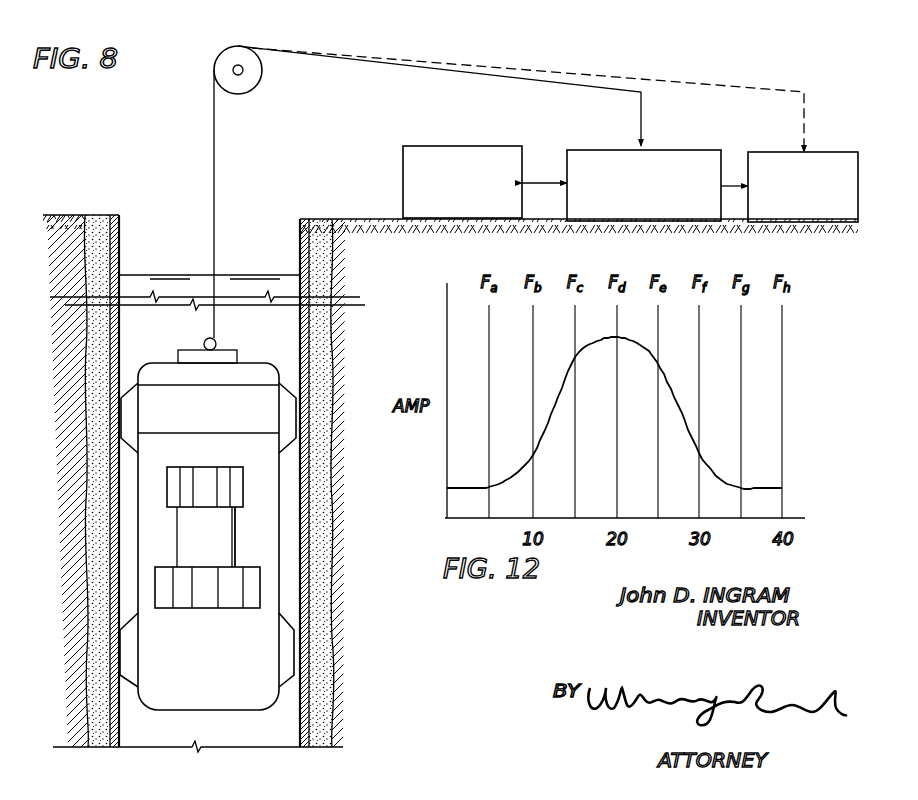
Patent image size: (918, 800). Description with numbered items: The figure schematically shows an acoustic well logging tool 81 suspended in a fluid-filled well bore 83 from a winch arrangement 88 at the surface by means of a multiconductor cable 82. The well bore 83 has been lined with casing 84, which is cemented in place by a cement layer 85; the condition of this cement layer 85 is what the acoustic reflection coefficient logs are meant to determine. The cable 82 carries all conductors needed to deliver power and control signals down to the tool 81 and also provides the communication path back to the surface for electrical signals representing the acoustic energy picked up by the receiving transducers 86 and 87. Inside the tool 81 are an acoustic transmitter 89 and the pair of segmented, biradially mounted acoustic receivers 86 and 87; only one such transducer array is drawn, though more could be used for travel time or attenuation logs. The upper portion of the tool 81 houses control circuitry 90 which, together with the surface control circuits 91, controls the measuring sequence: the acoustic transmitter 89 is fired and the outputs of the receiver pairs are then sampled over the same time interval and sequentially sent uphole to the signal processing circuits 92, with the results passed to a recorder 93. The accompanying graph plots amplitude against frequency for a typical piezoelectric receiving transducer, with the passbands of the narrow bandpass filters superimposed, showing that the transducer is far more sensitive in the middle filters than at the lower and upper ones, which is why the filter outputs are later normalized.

The acoustic well logging tool 81 is at (211, 668).
The multiconductor cable 82 is at (212, 177).
The fluid-filled well bore 83 is at (132, 344).
The casing 84 is at (113, 491).
The cement layer 85 is at (80, 599).
The receiving transducer 86 is at (167, 482).
The receiving transducer 87 is at (153, 600).
The winch arrangement 88 is at (247, 78).
The acoustic transmitter 89 is at (187, 537).
The control circuitry 90 is at (264, 388).
The surface control circuits 91 is at (503, 145).
The signal processing circuits 92 is at (683, 149).
The recorder 93 is at (830, 151).